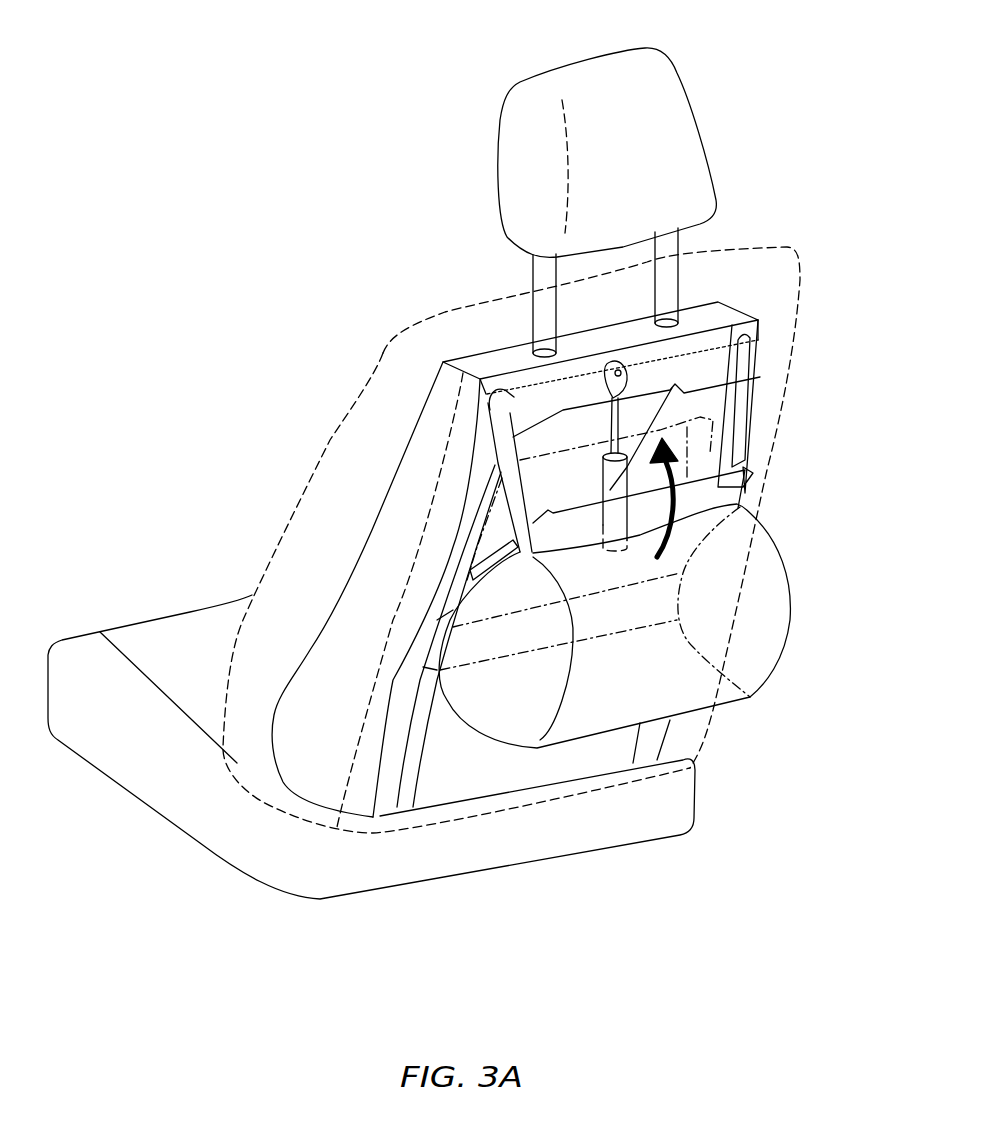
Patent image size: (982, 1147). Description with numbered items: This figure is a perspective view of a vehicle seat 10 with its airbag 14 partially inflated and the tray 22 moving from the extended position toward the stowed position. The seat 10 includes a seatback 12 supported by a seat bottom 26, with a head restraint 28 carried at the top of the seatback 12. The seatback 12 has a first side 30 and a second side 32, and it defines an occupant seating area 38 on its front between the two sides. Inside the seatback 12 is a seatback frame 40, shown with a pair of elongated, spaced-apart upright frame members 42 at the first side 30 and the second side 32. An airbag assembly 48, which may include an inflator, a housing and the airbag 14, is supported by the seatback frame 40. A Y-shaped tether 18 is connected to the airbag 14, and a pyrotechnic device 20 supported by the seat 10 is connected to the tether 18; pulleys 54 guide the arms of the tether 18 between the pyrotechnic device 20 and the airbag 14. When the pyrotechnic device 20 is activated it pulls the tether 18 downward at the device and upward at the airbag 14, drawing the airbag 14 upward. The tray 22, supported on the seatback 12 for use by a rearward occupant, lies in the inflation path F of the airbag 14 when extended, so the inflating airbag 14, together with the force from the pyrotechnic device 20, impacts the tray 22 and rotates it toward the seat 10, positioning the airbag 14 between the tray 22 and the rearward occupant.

The seat 10 is at (774, 208).
The seatback 12 is at (800, 262).
The airbag 14 is at (750, 643).
The tether 18 is at (530, 383).
The pyrotechnic device 20 is at (602, 493).
The tray 22 is at (727, 507).
The seat bottom 26 is at (167, 630).
The head restraint 28 is at (583, 57).
The first side 30 is at (403, 390).
The second side 32 is at (800, 320).
The occupant seating area 38 is at (182, 412).
The seatback frame 40 is at (271, 735).
The upright frame members 42 is at (400, 467).
The airbag assembly 48 is at (430, 684).
The pulleys 54 is at (513, 383).
The inflation path F is at (693, 497).